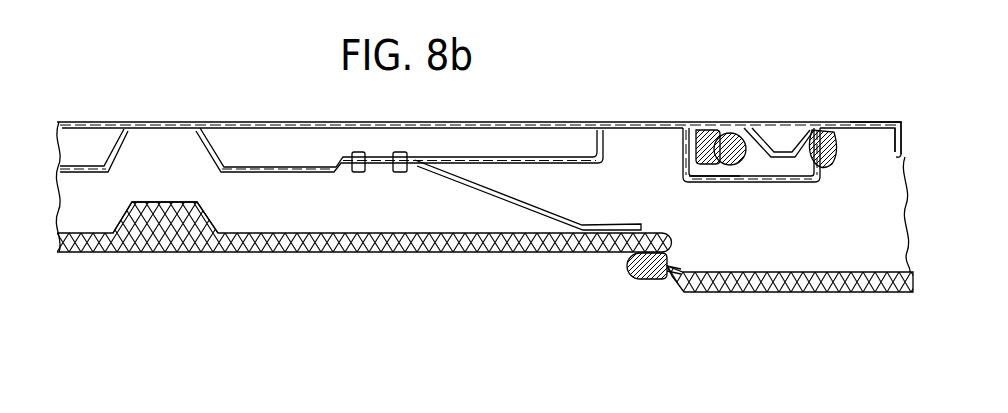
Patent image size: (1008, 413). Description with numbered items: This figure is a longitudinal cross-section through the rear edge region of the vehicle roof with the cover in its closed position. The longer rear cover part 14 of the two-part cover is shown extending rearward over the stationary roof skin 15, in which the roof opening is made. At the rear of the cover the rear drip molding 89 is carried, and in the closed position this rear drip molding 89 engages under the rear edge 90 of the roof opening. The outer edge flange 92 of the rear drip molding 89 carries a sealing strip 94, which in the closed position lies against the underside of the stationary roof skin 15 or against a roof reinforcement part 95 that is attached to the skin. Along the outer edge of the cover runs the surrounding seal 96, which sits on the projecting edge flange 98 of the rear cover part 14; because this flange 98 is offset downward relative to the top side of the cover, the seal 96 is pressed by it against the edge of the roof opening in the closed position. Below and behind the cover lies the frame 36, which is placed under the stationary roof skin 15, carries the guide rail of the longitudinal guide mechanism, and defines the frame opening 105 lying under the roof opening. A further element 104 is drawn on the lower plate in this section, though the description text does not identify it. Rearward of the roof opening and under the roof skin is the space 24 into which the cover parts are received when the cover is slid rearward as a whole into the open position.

The rear cover part 14 is at (249, 122).
The stationary roof skin 15 is at (866, 122).
The space 24 is at (828, 248).
The frame 36 is at (745, 282).
The rear drip molding 89 is at (775, 170).
The rear edge of the roof opening 90 is at (712, 124).
The outer edge flange 92 is at (822, 142).
The sealing strip 94 is at (822, 124).
The roof reinforcement part 95 is at (879, 135).
The surrounding seal 96 is at (697, 122).
The projecting edge flange 98 is at (714, 158).
The support rib 104 is at (247, 241).
The frame opening 105 is at (528, 284).